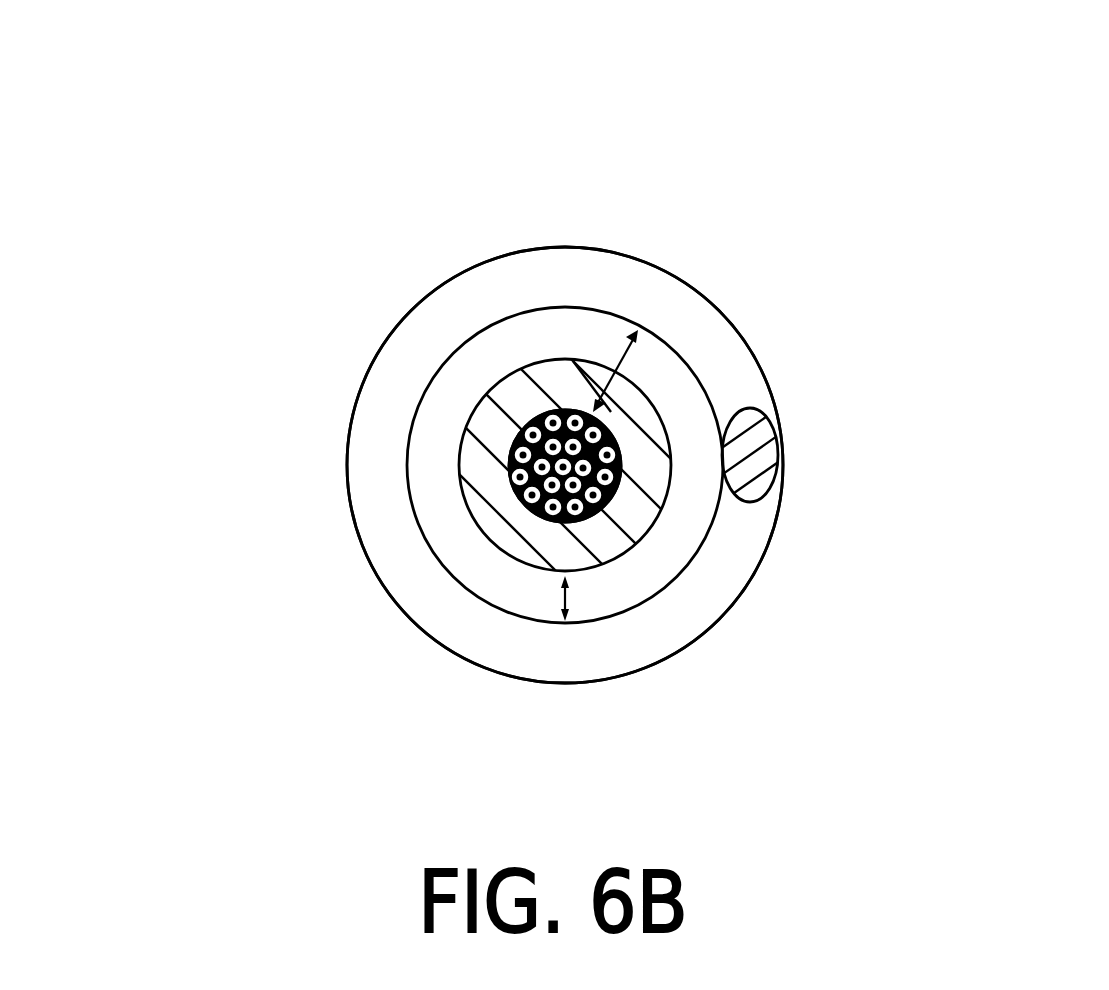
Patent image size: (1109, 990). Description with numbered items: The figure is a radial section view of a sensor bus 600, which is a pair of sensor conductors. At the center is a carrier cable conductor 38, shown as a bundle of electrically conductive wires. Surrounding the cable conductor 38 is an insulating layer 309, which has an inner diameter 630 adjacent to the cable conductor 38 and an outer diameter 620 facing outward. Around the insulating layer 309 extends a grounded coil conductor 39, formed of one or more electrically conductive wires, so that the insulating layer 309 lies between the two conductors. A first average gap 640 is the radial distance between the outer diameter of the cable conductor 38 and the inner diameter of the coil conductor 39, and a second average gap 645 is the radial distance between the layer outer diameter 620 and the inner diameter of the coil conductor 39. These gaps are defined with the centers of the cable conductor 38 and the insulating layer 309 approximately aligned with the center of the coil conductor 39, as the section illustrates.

The sensor bus 600 is at (542, 102).
The inner diameter 630 is at (565, 404).
The coil conductor 39 is at (747, 530).
The outer diameter 620 is at (488, 430).
The cable conductor 38 is at (512, 473).
The insulating layer 309 is at (518, 440).
The first average gap 640 is at (620, 364).
The second average gap 645 is at (568, 597).